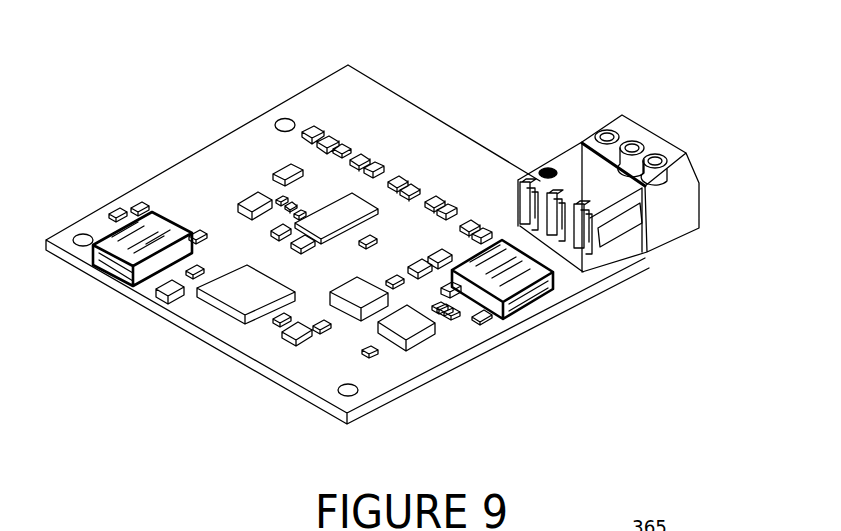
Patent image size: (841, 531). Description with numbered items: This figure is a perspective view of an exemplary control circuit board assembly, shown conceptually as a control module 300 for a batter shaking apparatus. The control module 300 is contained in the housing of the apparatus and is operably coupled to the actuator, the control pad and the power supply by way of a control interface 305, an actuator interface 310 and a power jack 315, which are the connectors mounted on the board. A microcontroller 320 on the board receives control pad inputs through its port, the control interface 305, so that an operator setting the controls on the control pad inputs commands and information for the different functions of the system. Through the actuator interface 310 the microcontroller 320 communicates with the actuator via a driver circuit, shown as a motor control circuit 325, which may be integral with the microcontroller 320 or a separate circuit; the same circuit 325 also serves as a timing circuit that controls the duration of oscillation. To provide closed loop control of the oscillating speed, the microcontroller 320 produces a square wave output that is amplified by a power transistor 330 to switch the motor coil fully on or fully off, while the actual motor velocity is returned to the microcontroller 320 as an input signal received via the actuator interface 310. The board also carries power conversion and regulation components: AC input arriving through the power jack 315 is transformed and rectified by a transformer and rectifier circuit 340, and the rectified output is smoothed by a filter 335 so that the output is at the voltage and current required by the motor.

The control module 300 is at (203, 140).
The control interface 305 is at (160, 268).
The actuator interface 310 is at (473, 298).
The power jack 315 is at (630, 127).
The microcontroller 320 is at (252, 305).
The motor control circuit 325 is at (342, 208).
The power transistor 330 is at (353, 292).
The filter 335 is at (405, 328).
The transformer and rectifier circuit 340 is at (610, 205).